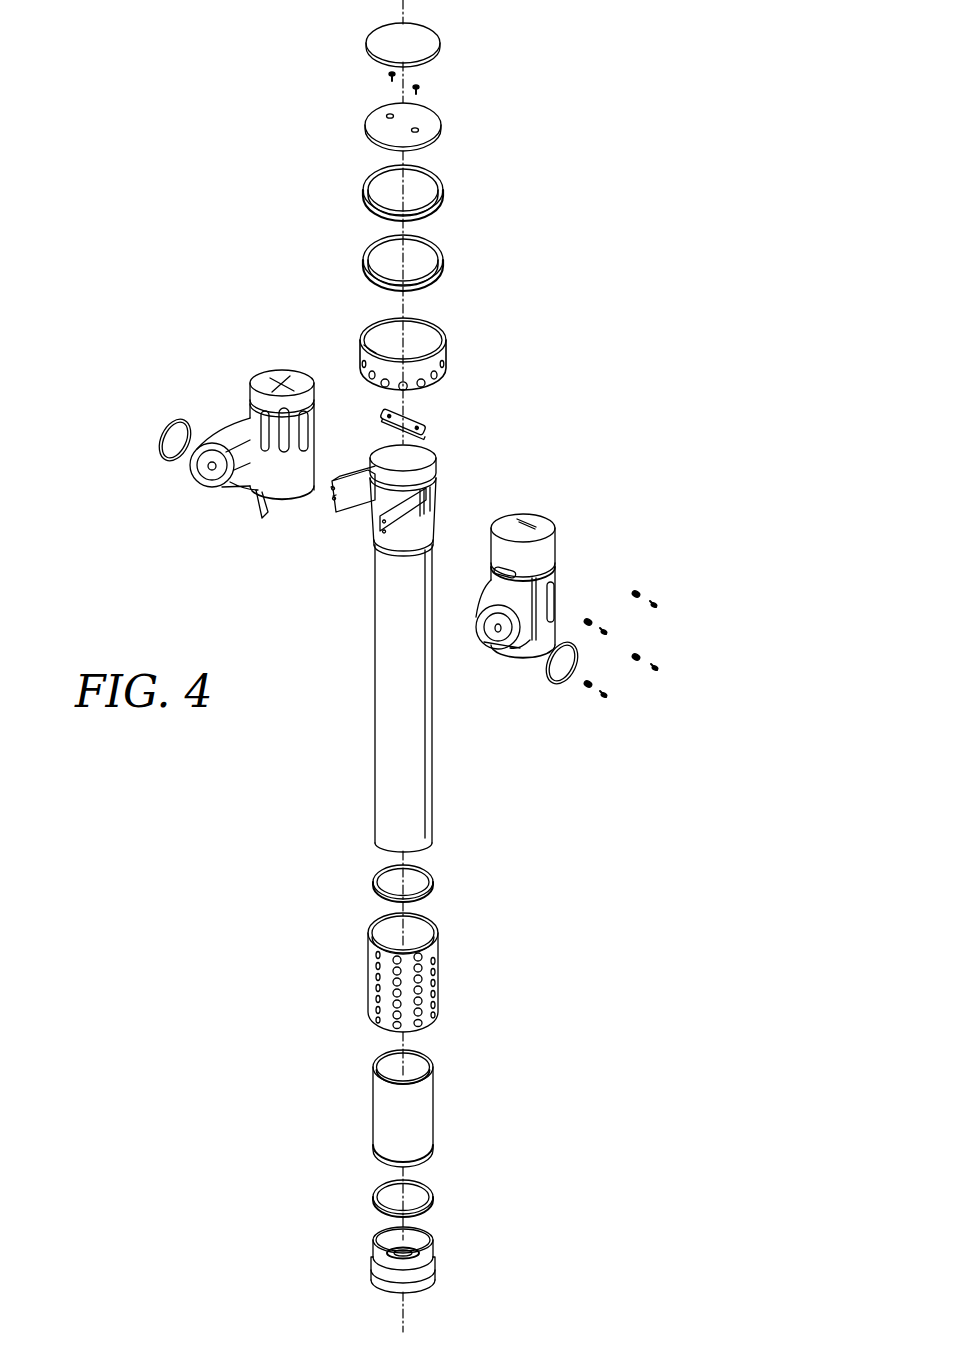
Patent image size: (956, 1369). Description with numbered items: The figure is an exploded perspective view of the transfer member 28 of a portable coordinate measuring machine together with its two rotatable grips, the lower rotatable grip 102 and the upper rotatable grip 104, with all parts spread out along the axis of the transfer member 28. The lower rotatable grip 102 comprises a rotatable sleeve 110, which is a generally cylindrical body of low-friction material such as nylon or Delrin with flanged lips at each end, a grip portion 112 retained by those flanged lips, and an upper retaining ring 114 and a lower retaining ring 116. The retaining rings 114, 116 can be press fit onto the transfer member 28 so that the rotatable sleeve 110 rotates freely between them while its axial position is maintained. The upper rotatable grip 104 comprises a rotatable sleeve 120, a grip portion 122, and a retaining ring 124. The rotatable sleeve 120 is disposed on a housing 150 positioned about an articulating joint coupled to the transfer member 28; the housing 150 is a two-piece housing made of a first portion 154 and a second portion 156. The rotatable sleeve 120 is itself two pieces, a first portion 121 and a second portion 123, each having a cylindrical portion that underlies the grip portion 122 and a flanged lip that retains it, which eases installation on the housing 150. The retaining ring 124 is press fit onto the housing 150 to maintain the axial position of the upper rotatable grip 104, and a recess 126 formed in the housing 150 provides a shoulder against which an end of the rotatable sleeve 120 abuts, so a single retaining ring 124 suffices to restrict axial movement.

The transfer member 28 is at (427, 754).
The lower rotatable grip 102 is at (527, 862).
The upper rotatable grip 104 is at (527, 100).
The rotatable sleeve 110 is at (428, 1117).
The grip portion 112 is at (437, 987).
The upper retaining ring 114 is at (372, 884).
The lower retaining ring 116 is at (434, 1203).
The rotatable sleeve 120 is at (298, 168).
The first portion 121 is at (440, 206).
The grip portion 122 is at (361, 352).
The second portion 123 is at (443, 277).
The retaining ring 124 is at (362, 127).
The recess 126 is at (437, 479).
The housing 150 is at (578, 498).
The first portion 154 is at (557, 573).
The second portion 156 is at (282, 382).